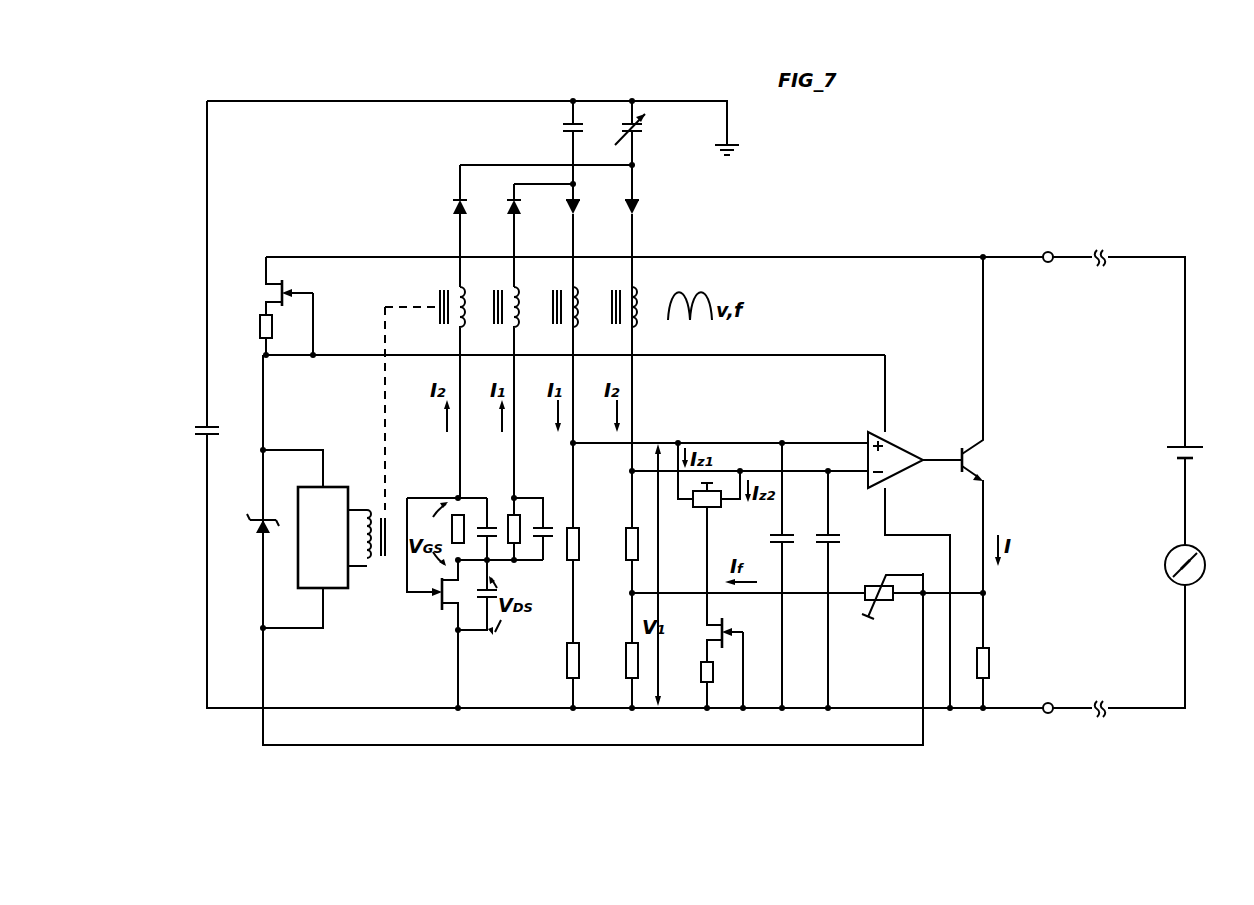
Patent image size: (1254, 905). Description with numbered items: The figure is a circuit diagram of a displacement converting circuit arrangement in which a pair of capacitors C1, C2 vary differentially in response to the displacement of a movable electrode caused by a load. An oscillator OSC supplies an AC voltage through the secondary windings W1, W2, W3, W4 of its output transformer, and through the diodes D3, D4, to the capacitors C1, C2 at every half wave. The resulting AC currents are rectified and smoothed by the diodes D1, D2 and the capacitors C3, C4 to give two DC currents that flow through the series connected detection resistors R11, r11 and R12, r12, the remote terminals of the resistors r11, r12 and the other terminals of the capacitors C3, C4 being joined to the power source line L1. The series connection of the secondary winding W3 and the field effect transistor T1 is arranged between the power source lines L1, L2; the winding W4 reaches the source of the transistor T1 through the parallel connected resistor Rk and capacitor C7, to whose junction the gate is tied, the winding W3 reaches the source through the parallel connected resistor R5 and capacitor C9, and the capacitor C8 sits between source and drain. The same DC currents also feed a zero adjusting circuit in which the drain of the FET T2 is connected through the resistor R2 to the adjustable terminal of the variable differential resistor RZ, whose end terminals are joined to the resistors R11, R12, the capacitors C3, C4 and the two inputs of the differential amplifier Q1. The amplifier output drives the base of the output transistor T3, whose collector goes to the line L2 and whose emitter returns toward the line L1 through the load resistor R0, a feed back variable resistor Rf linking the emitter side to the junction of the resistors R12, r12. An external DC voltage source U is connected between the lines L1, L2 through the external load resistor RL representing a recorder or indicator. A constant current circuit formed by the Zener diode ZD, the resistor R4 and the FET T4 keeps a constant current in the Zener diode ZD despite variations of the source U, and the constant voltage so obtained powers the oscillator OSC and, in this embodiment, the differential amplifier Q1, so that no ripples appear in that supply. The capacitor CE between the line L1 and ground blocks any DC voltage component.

The power source line L1 is at (410, 710).
The power source line L2 is at (776, 256).
The capacitor C1 is at (560, 150).
The capacitor C2 is at (643, 150).
The diode D1 is at (559, 321).
The diode D2 is at (647, 335).
The diode D3 is at (499, 235).
The diode D4 is at (445, 226).
The secondary winding W1 is at (559, 354).
The secondary winding W2 is at (616, 368).
The secondary winding W3 is at (498, 382).
The secondary winding W4 is at (442, 382).
The FET T4 is at (272, 306).
The resistor R4 is at (252, 335).
The capacitor CE is at (188, 433).
The Zener diode ZD is at (251, 535).
The oscillator OSC is at (322, 539).
The field effect transistor T1 is at (473, 603).
The resistor Rk is at (462, 507).
The capacitor C7 is at (493, 520).
The resistor R5 is at (517, 512).
The capacitor C9 is at (548, 540).
The capacitor C8 is at (472, 592).
The resistor R11 is at (579, 540).
The resistor R12 is at (620, 556).
The resistor r11 is at (579, 660).
The resistor r12 is at (624, 660).
The variable differential resistor RZ is at (710, 534).
The FET T2 is at (730, 660).
The resistor R2 is at (718, 686).
The capacitor C3 is at (789, 577).
The capacitor C4 is at (835, 591).
The differential amplifier Q1 is at (900, 446).
The output transistor T3 is at (985, 452).
The feed back variable resistor Rf is at (892, 599).
The load resistor R0 is at (996, 679).
The external DC voltage source U is at (1196, 492).
The external load resistor RL is at (1200, 565).